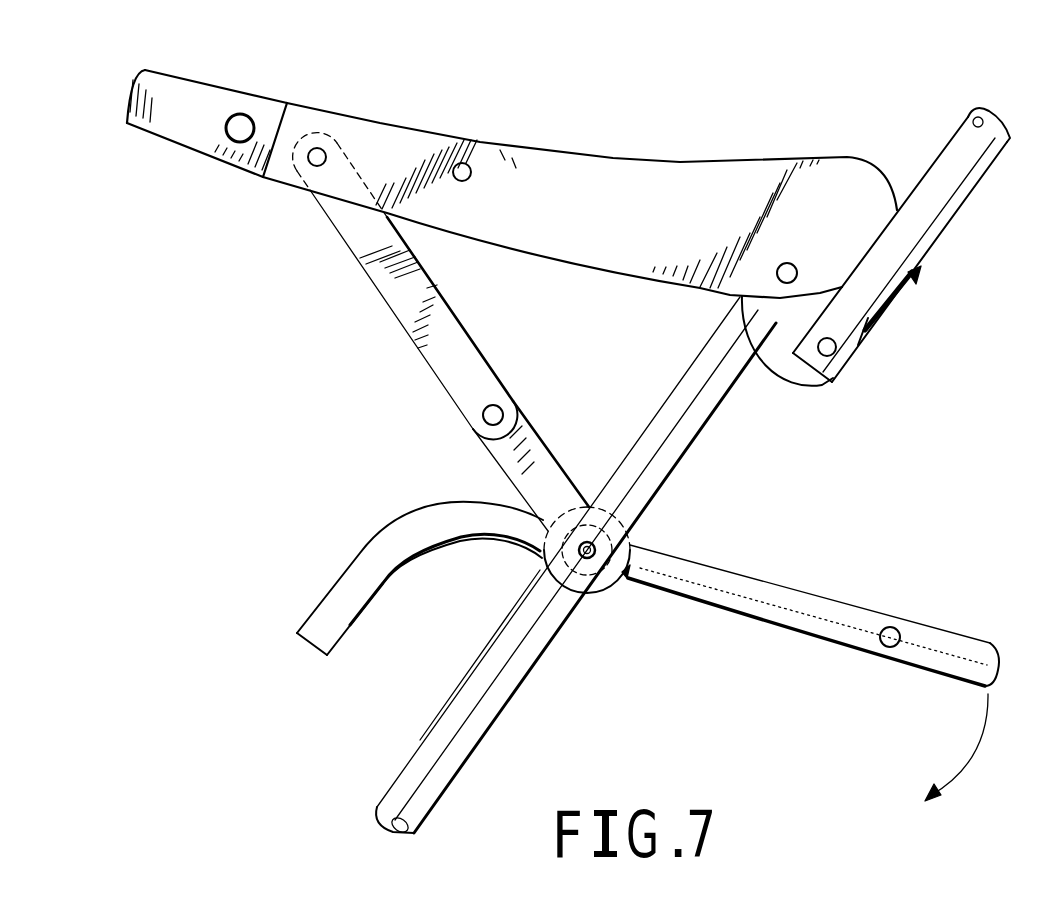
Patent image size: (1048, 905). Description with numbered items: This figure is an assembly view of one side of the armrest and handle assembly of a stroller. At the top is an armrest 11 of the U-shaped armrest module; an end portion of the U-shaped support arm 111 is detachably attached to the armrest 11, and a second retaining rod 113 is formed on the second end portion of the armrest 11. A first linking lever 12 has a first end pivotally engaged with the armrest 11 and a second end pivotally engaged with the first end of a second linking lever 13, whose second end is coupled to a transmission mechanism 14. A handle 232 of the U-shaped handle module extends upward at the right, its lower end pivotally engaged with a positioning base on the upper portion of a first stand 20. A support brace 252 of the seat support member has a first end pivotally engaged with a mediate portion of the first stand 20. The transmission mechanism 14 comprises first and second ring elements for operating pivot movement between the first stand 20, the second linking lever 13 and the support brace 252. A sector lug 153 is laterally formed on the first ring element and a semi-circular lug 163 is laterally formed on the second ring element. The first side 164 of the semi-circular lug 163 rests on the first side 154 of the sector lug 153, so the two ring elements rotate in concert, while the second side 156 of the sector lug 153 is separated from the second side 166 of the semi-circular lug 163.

The armrest 11 is at (620, 170).
The support arm 111 is at (203, 90).
The second retaining rod 113 is at (462, 166).
The first linking lever 12 is at (453, 323).
The second linking lever 13 is at (543, 447).
The transmission mechanism 14 is at (593, 600).
The first stand 20 is at (510, 687).
The handle 232 is at (963, 180).
The support brace 252 is at (960, 642).
The sector lug 153 is at (518, 608).
The first side of the sector lug 154 is at (572, 506).
The second side of the sector lug 156 is at (624, 574).
The semi-circular lug 163 is at (636, 514).
The first side of the semi-circular lug 164 is at (533, 560).
The second side of the semi-circular lug 166 is at (620, 562).